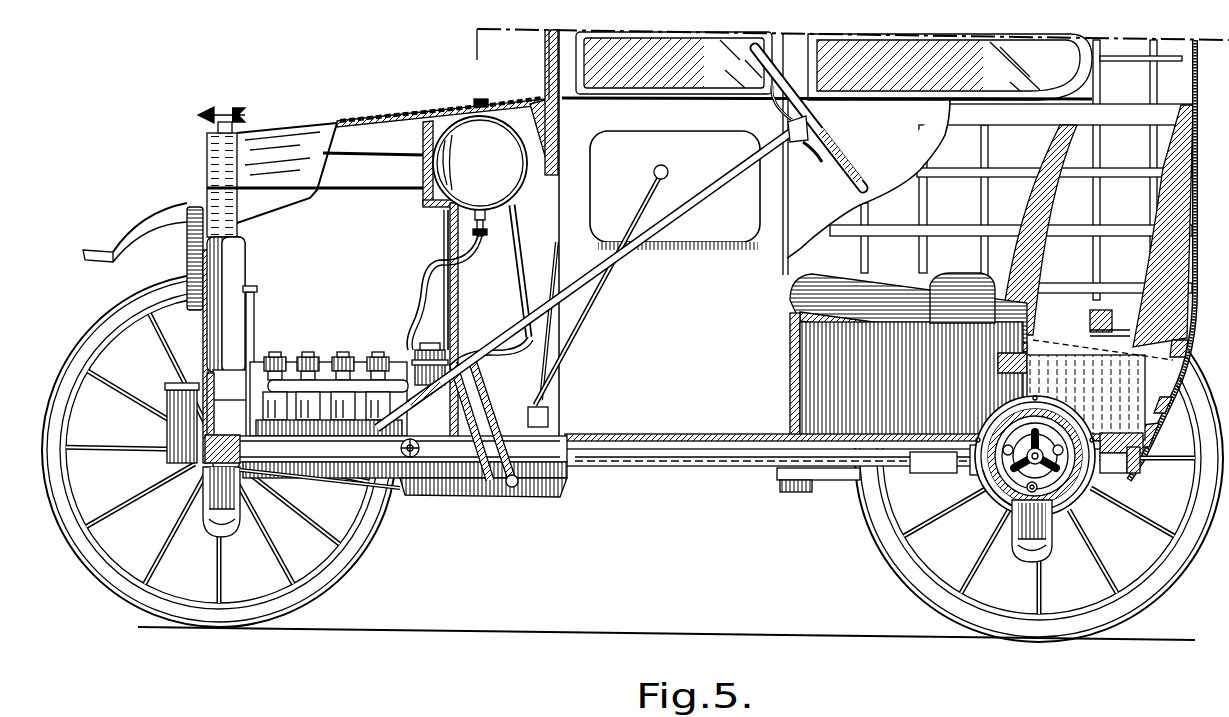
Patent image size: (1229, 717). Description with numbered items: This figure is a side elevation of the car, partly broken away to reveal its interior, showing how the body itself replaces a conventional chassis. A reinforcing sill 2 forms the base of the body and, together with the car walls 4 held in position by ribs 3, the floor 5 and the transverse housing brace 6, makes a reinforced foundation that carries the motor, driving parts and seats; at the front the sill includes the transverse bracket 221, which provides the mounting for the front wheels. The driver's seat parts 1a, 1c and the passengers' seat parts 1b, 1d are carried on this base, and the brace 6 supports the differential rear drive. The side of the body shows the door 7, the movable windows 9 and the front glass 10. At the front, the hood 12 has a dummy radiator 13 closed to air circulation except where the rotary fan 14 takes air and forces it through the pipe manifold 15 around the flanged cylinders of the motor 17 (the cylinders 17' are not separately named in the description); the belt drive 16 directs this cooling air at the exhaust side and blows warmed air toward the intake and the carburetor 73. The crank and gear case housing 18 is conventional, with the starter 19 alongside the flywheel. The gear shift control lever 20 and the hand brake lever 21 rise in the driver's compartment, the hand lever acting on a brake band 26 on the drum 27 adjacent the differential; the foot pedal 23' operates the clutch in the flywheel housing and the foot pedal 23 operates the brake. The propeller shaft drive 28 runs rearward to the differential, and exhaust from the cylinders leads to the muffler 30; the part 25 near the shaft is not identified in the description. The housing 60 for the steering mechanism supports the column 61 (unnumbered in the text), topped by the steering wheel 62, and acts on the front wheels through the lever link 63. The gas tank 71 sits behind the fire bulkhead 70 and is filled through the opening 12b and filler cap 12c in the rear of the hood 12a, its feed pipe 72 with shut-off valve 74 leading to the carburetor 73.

The driver's seat part 1a is at (790, 305).
The passenger seat part 1b is at (957, 284).
The driver's seat part 1c is at (1030, 205).
The passenger seat part 1d is at (1155, 264).
The reinforcing sill 2 is at (1112, 472).
The ribs 3 is at (1182, 352).
The car walls 4 is at (1192, 286).
The floor 5 is at (700, 434).
The housing brace 6 is at (1070, 395).
The door 7 is at (782, 200).
The windows 9 is at (834, 66).
The front glass 10 is at (545, 45).
The hood 12 is at (381, 113).
The hood rear portion 12a is at (449, 101).
The filler opening 12b is at (504, 98).
The filler cap 12c is at (481, 100).
The dummy radiator 13 is at (214, 155).
The rotary fan 14 is at (233, 263).
The pipe manifold 15 is at (326, 357).
The belt drive 16 is at (256, 337).
The motor 17 is at (400, 457).
The spark plugs 17' is at (291, 354).
The crank and gear case housing 18 is at (478, 492).
The starter 19 is at (410, 352).
The gear shift control lever 20 is at (566, 408).
The hand brake lever 21 is at (553, 393).
The front transverse bracket 221 is at (222, 433).
The brake foot pedal 23 is at (509, 271).
The clutch foot pedal 23' is at (491, 412).
The drive shaft sleeve 25 is at (845, 476).
The brake band 26 is at (990, 497).
The brake drum 27 is at (1020, 522).
The propeller shaft drive 28 is at (626, 470).
The muffler 30 is at (783, 494).
The steering mechanism housing 60 is at (395, 428).
The steering column 61 is at (714, 190).
The steering wheel 62 is at (845, 155).
The lever link 63 is at (397, 486).
The fire bulkhead 70 is at (448, 285).
The gas tank 71 is at (480, 163).
The feed pipe 72 is at (438, 259).
The carburetor 73 is at (328, 422).
The shut-off valve 74 is at (481, 242).